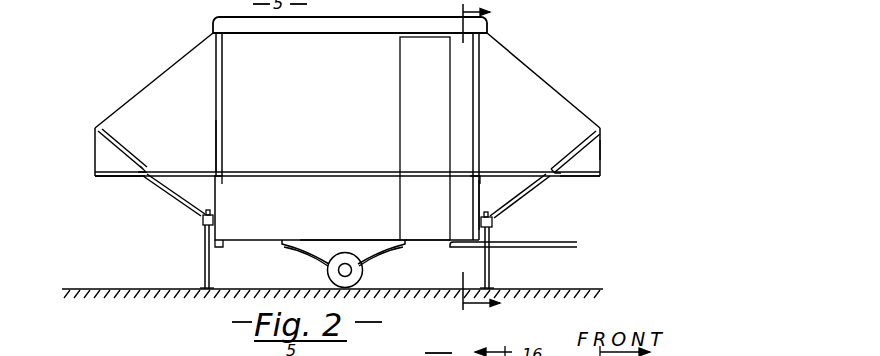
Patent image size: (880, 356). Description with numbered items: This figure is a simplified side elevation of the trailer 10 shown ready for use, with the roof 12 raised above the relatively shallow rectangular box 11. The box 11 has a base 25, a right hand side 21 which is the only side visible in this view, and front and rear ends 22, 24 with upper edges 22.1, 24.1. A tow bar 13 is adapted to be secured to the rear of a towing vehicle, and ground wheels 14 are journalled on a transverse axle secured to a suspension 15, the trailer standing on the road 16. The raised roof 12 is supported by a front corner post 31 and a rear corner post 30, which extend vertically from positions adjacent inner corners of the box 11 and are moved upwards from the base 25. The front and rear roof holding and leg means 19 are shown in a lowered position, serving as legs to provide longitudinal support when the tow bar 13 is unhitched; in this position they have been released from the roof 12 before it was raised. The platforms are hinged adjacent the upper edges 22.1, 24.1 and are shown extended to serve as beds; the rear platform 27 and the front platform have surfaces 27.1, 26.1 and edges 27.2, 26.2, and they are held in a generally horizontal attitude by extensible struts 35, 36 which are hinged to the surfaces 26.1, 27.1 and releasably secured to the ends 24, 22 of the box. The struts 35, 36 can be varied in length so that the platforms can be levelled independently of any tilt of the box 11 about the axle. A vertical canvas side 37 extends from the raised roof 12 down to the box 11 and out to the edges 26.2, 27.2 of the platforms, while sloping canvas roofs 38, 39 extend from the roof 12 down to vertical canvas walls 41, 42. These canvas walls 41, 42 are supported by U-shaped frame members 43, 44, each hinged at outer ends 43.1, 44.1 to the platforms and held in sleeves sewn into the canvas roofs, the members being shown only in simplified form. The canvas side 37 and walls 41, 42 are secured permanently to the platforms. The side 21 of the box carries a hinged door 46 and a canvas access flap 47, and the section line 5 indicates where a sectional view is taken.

The section line 5- 5 is at (465, 158).
The trailer 10 is at (508, 50).
The rectangular box 11 is at (318, 158).
The roof 12 is at (212, 22).
The tow bar 13 is at (548, 240).
The ground wheels 14 is at (329, 279).
The suspension 15 is at (395, 253).
The road 16 is at (552, 288).
The roof holding and leg means 19 is at (203, 273).
The right hand side 21 is at (292, 233).
The front end 22 is at (487, 189).
The upper edge 22.1 is at (475, 177).
The rear end 24 is at (215, 197).
The upper edge 24.1 is at (221, 181).
The base 25 is at (225, 244).
The surface 26.1 is at (600, 178).
The edge 26.2 is at (601, 148).
The rear platform 27 is at (94, 180).
The surface 27.1 is at (144, 178).
The edge 27.2 is at (102, 178).
The rear corner post 30 is at (223, 80).
The front corner post 31 is at (479, 114).
The extensible strut 35 is at (177, 209).
The extensible strut 36 is at (530, 189).
The vertical canvas side 37 is at (362, 109).
The sloping canvas roof 38 is at (161, 73).
The sloping canvas roof 39 is at (532, 72).
The vertical canvas wall 41 is at (95, 153).
The vertical canvas wall 42 is at (602, 129).
The U-shaped frame member 43 is at (111, 136).
The outer end 43.1 is at (151, 151).
The U-shaped frame member 44 is at (583, 144).
The outer end 44.1 is at (565, 163).
The hinged door 46 is at (416, 212).
The canvas access flap 47 is at (411, 131).